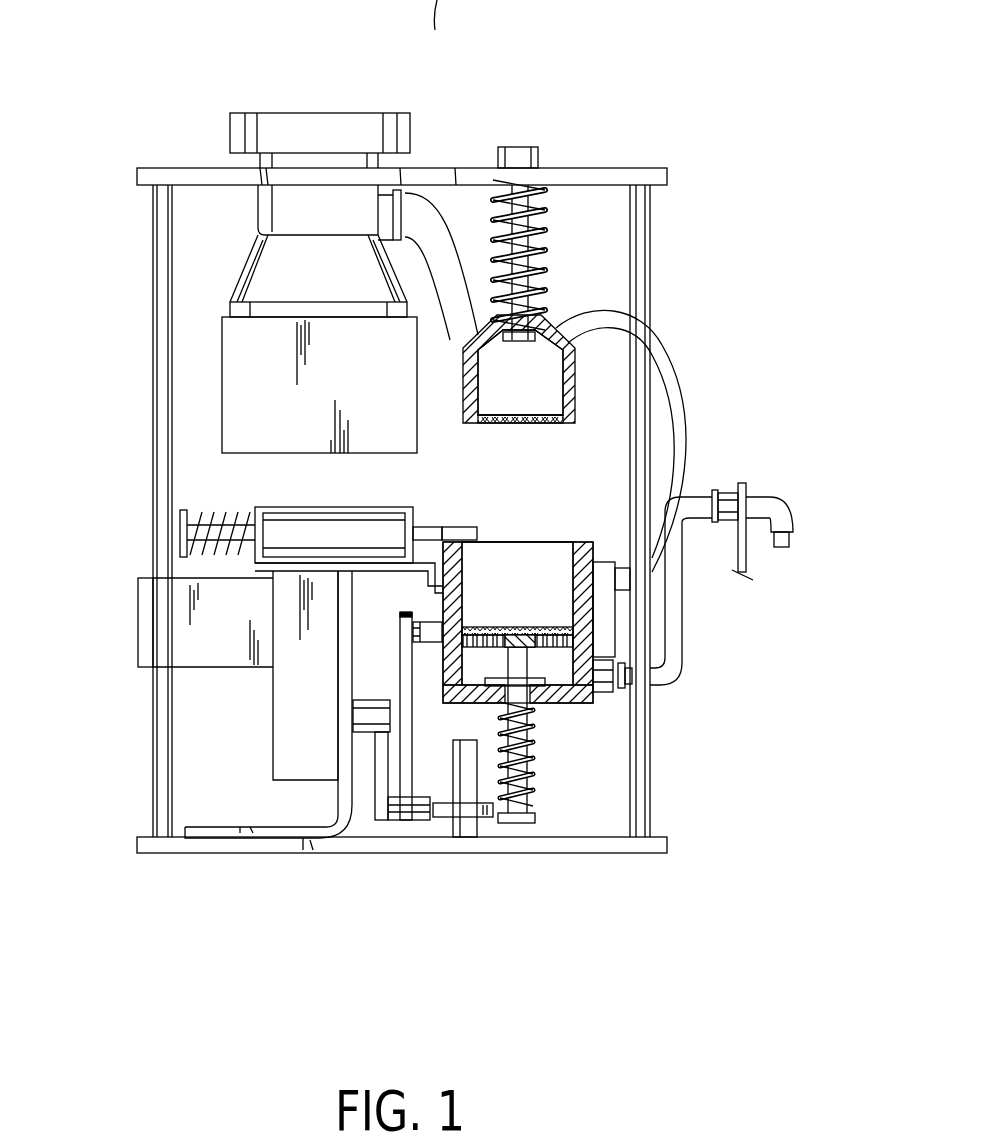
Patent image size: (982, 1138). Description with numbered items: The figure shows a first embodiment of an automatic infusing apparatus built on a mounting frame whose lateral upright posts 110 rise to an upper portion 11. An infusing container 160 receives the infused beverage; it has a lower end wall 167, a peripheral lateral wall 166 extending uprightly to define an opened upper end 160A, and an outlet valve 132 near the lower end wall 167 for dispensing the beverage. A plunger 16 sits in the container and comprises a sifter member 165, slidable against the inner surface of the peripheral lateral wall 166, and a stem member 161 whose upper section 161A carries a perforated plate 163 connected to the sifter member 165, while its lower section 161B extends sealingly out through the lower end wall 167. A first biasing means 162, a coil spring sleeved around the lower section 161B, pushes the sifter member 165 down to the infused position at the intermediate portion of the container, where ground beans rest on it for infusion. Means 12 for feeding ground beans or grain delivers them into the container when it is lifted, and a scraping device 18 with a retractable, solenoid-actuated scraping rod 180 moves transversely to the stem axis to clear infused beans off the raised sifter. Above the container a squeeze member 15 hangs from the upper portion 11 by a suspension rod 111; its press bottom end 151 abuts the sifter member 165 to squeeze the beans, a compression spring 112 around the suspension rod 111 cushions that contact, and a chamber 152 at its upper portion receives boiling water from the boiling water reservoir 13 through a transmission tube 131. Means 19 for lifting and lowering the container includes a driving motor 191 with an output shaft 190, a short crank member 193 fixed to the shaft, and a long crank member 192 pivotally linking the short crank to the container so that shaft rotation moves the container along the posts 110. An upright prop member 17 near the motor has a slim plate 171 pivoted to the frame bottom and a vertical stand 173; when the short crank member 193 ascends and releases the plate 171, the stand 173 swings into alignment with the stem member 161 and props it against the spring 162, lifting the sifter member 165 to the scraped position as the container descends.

The upper portion 11 is at (643, 178).
The upright posts 110 is at (643, 790).
The means for feeding ground beans or grain 12 is at (300, 125).
The suspension rod 111 is at (545, 212).
The compression spring 112 is at (545, 262).
The squeeze member 15 is at (547, 330).
The chamber 152 is at (548, 385).
The press bottom end 151 is at (548, 420).
The transmission tube 131 is at (668, 345).
The boiling water reservoir 13 is at (600, 567).
The lower end wall 167 is at (590, 700).
The outlet valve 132 is at (683, 650).
The infusing container 160 is at (577, 543).
The peripheral lateral wall 166 is at (457, 567).
The opened upper end 160A is at (542, 550).
The plunger 16 is at (557, 752).
The sifter member 165 is at (478, 627).
The upper section 161A is at (527, 663).
The perforated plate 163 is at (555, 645).
The stem member 161 is at (518, 823).
The first biasing means 162 is at (537, 805).
The lower section 161B is at (530, 780).
The scraping device 18 is at (288, 513).
The retractable scraping rod 180 is at (450, 522).
The means for lifting and lowering 19 is at (252, 780).
The driving motor 191 is at (273, 695).
The output shaft 190 is at (373, 700).
The short crank member 193 is at (375, 815).
The long crank member 192 is at (408, 762).
The vertical stand 173 is at (465, 790).
The slim plate 171 is at (458, 812).
The upright prop member 17 is at (440, 822).